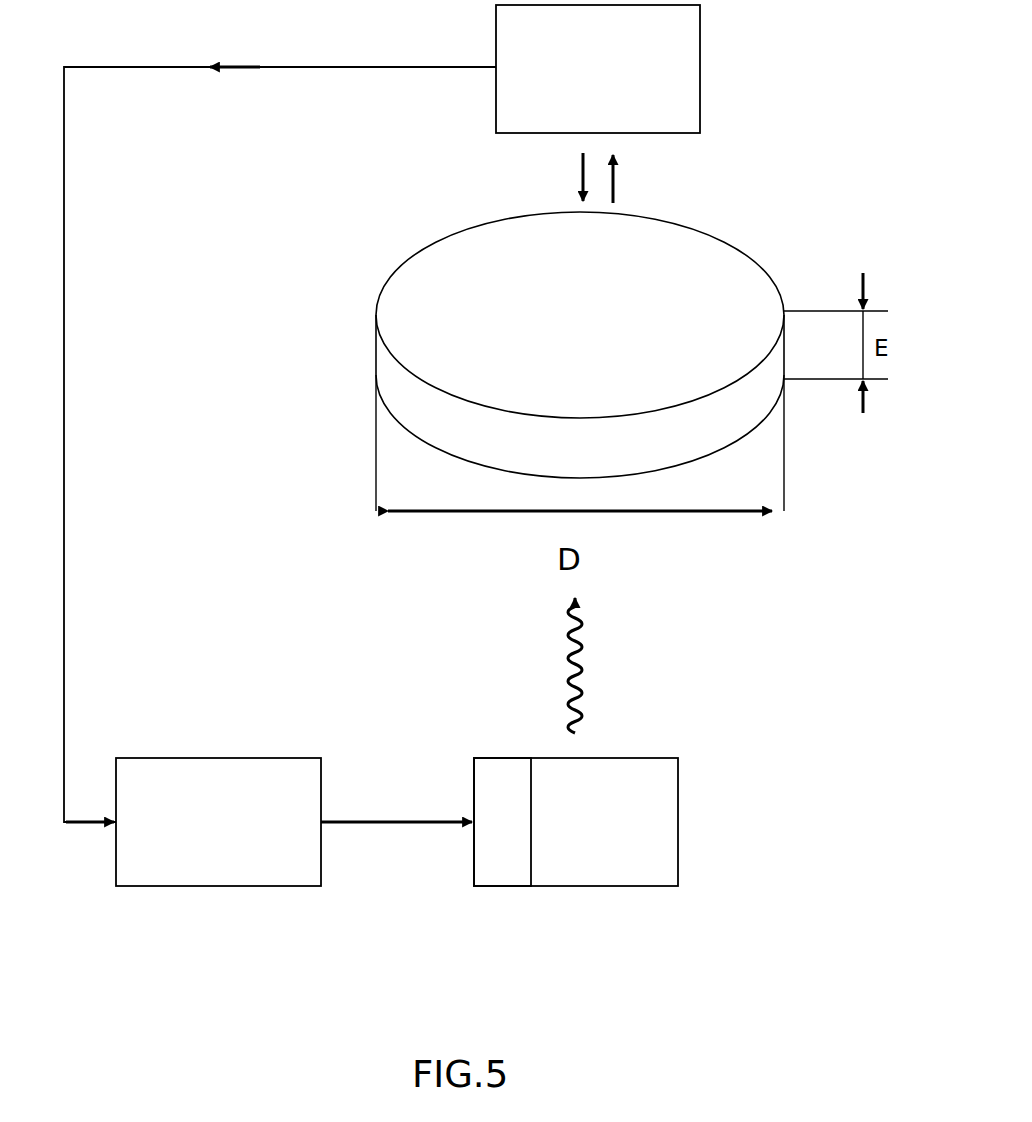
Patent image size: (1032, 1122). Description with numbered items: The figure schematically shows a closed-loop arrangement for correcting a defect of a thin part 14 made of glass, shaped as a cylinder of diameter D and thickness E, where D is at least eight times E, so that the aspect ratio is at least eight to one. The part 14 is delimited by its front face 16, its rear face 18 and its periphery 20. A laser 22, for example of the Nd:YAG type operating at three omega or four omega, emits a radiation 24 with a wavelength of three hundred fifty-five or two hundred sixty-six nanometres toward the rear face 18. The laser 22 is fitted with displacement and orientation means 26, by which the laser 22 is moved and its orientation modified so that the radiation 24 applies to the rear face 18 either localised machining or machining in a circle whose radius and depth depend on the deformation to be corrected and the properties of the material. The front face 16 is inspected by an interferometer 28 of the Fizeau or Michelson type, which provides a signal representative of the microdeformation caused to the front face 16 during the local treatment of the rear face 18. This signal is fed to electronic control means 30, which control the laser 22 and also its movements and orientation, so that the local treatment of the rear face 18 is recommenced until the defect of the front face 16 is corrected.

The thin part 14 is at (541, 393).
The front face 16 is at (716, 272).
The rear face 18 is at (690, 481).
The periphery 20 is at (400, 409).
The laser 22 is at (625, 872).
The radiation 24 is at (583, 660).
The displacement and orientation means 26 is at (500, 886).
The interferometer 28 is at (700, 77).
The electronic control means 30 is at (203, 886).